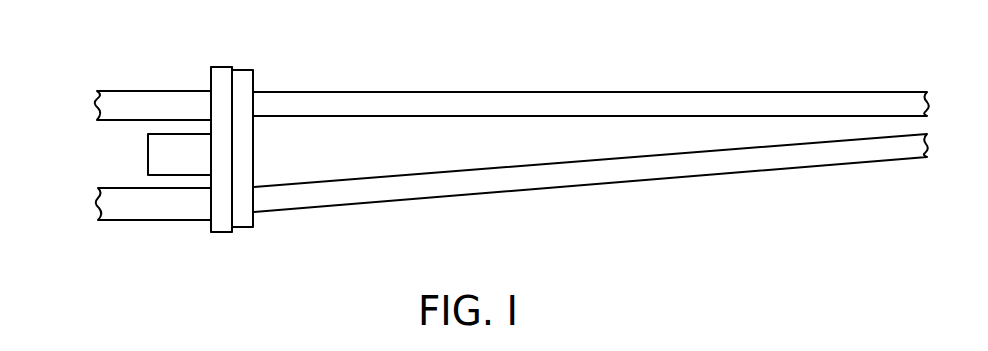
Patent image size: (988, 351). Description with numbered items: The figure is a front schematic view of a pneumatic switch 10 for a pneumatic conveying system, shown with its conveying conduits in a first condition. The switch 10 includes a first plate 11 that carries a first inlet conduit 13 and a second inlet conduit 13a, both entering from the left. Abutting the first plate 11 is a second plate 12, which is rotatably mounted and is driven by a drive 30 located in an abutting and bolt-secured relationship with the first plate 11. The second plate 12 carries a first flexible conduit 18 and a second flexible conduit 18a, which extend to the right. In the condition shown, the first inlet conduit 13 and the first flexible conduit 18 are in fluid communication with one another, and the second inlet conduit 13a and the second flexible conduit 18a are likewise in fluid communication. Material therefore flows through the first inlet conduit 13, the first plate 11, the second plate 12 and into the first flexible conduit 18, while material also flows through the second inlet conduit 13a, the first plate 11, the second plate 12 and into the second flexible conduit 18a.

The pneumatic switch 10 is at (128, 68).
The first plate 11 is at (222, 67).
The second plate 12 is at (252, 70).
The first inlet conduit 13 is at (158, 91).
The second inlet conduit 13a is at (160, 222).
The first flexible conduit 18 is at (413, 92).
The second flexible conduit 18a is at (402, 203).
The drive 30 is at (148, 160).